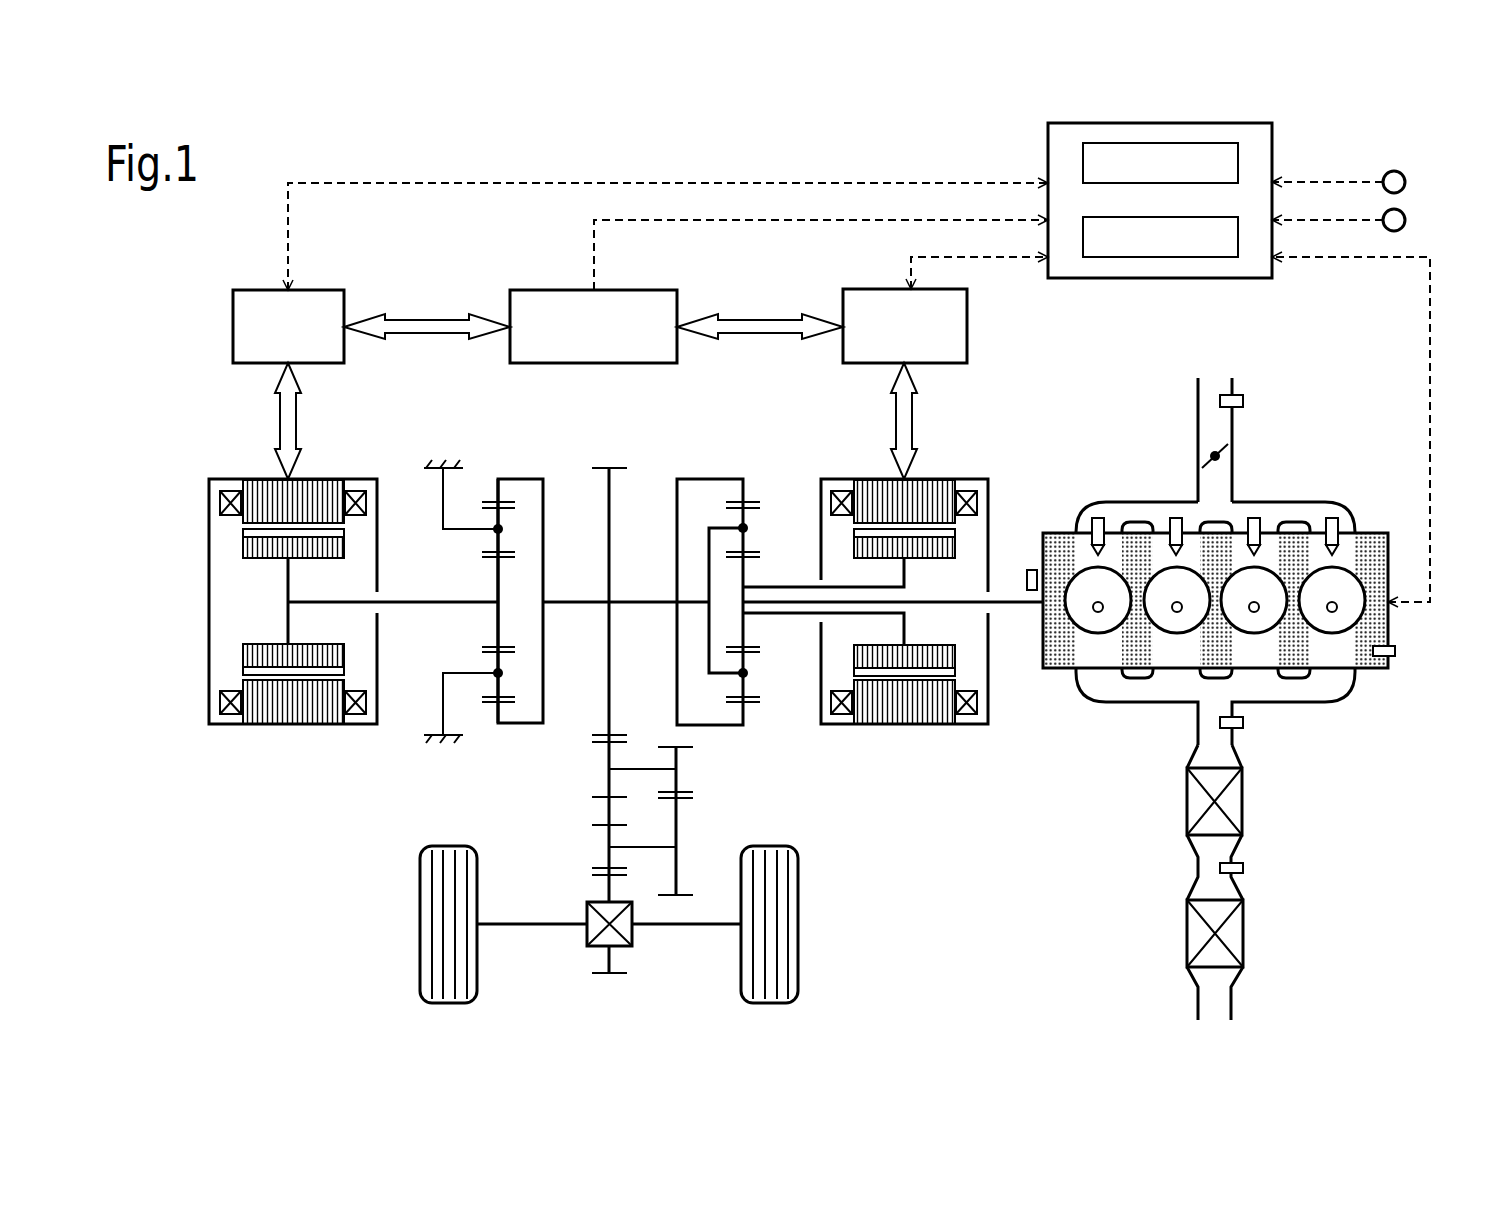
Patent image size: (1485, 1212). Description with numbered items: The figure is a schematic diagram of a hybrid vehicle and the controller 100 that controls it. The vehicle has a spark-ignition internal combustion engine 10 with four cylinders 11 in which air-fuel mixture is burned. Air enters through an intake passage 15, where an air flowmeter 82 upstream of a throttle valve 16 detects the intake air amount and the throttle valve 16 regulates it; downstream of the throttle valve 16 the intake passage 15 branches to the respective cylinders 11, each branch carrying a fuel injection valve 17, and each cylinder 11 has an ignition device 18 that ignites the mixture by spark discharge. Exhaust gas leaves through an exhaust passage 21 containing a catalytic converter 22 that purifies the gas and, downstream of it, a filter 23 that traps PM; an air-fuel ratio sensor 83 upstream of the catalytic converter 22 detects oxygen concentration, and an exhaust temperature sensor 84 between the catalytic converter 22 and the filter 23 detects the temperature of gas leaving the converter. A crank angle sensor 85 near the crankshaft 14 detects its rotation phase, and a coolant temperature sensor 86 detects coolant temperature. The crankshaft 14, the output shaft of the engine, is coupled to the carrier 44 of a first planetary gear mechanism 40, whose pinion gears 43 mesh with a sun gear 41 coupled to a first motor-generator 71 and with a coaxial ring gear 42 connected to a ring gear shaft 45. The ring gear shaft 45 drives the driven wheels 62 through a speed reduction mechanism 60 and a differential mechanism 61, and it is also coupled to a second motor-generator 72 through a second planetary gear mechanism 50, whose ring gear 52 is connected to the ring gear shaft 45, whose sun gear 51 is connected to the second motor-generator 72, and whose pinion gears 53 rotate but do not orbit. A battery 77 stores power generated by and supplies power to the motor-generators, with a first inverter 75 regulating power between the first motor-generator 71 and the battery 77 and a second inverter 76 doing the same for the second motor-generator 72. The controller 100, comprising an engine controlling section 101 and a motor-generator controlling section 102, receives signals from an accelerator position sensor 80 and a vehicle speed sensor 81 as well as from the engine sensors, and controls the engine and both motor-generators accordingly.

The internal combustion engine 10 is at (1228, 699).
The cylinders 11 is at (1085, 594).
The crankshaft 14 is at (1017, 605).
The intake passage 15 is at (1197, 424).
The throttle valve 16 is at (1228, 446).
The fuel injection valve 17 is at (1176, 517).
The ignition device 18 is at (1329, 637).
The exhaust passage 21 is at (1197, 871).
The catalytic converter 22 is at (1232, 800).
The filter 23 is at (1234, 933).
The first planetary gear mechanism 40 is at (672, 561).
The sun gear 41 is at (746, 577).
The ring gear 42 is at (746, 486).
The pinion gears 43 is at (746, 528).
The carrier 44 is at (709, 618).
The ring gear shaft 45 is at (648, 600).
The second planetary gear mechanism 50 is at (495, 570).
The sun gear 51 is at (496, 628).
The ring gear 52 is at (496, 490).
The pinion gears 53 is at (492, 538).
The speed reduction mechanism 60 is at (572, 785).
The differential mechanism 61 is at (586, 936).
The driven wheels 62 is at (419, 896).
The first motor-generator 71 is at (837, 478).
The second motor-generator 72 is at (234, 478).
The first inverter 75 is at (873, 288).
The second inverter 76 is at (249, 289).
The battery 77 is at (538, 289).
The accelerator position sensor 80 is at (1406, 182).
The vehicle speed sensor 81 is at (1406, 220).
The air flowmeter 82 is at (1245, 400).
The air-fuel ratio sensor 83 is at (1245, 724).
The exhaust temperature sensor 84 is at (1245, 870).
The crank angle sensor 85 is at (1030, 568).
The coolant temperature sensor 86 is at (1396, 650).
The controller 100 is at (1188, 224).
The engine controlling section 101 is at (1168, 215).
The motor-generator controlling section 102 is at (1222, 141).